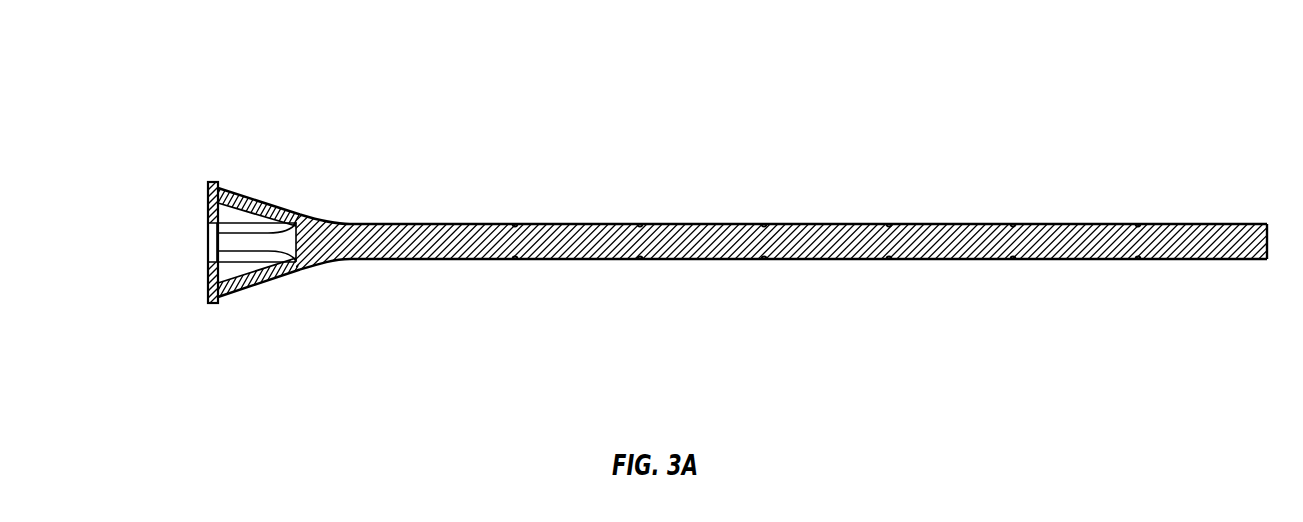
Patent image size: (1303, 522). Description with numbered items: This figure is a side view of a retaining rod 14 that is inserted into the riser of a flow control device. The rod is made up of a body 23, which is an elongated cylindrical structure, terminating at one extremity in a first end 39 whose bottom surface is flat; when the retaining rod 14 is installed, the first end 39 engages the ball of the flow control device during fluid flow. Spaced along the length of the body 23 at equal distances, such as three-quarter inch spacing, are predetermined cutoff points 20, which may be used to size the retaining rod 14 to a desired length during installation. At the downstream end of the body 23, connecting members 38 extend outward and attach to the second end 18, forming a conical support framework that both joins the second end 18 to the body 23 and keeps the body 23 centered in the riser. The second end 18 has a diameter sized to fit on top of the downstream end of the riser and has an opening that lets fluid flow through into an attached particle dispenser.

The retaining rod 14 is at (107, 72).
The second end 18 is at (207, 218).
The connecting members 38 is at (258, 200).
The body 23 is at (765, 148).
The predetermined cutoff points 20 is at (1159, 204).
The first end 39 is at (1258, 259).